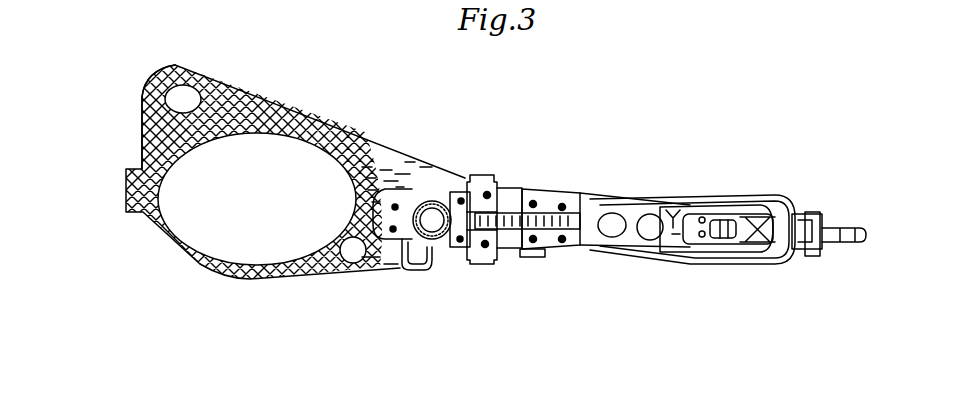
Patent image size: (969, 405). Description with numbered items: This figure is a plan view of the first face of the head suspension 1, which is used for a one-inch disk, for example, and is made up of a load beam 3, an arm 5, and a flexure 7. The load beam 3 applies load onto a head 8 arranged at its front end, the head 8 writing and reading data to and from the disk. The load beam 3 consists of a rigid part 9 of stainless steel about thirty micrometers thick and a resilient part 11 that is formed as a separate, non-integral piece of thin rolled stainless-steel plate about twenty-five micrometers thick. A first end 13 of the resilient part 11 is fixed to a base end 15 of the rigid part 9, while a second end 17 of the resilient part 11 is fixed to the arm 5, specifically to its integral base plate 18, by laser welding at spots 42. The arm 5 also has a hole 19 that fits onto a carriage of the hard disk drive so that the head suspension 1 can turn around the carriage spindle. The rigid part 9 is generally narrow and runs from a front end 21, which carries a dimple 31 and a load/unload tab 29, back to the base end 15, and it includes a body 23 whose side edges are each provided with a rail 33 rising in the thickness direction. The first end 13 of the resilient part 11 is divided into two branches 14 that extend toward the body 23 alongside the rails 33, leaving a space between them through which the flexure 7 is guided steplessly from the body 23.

The head suspension 1 is at (548, 113).
The load beam 3 is at (667, 190).
The arm 5 is at (297, 103).
The flexure 7 is at (792, 193).
The head 8 is at (763, 198).
The rigid part 9 is at (676, 218).
The resilient part 11 is at (513, 185).
The first end 13 is at (553, 197).
The branches 14 is at (523, 187).
The base end 15 is at (550, 253).
The second end 17 is at (427, 190).
The base plate 18 is at (458, 253).
The hole 19 is at (218, 80).
The front end 21 is at (705, 263).
The body 23 is at (638, 207).
The load/unload tab 29 is at (848, 224).
The dimple 31 is at (777, 253).
The rail 33 is at (595, 252).
The spots 42 is at (395, 203).